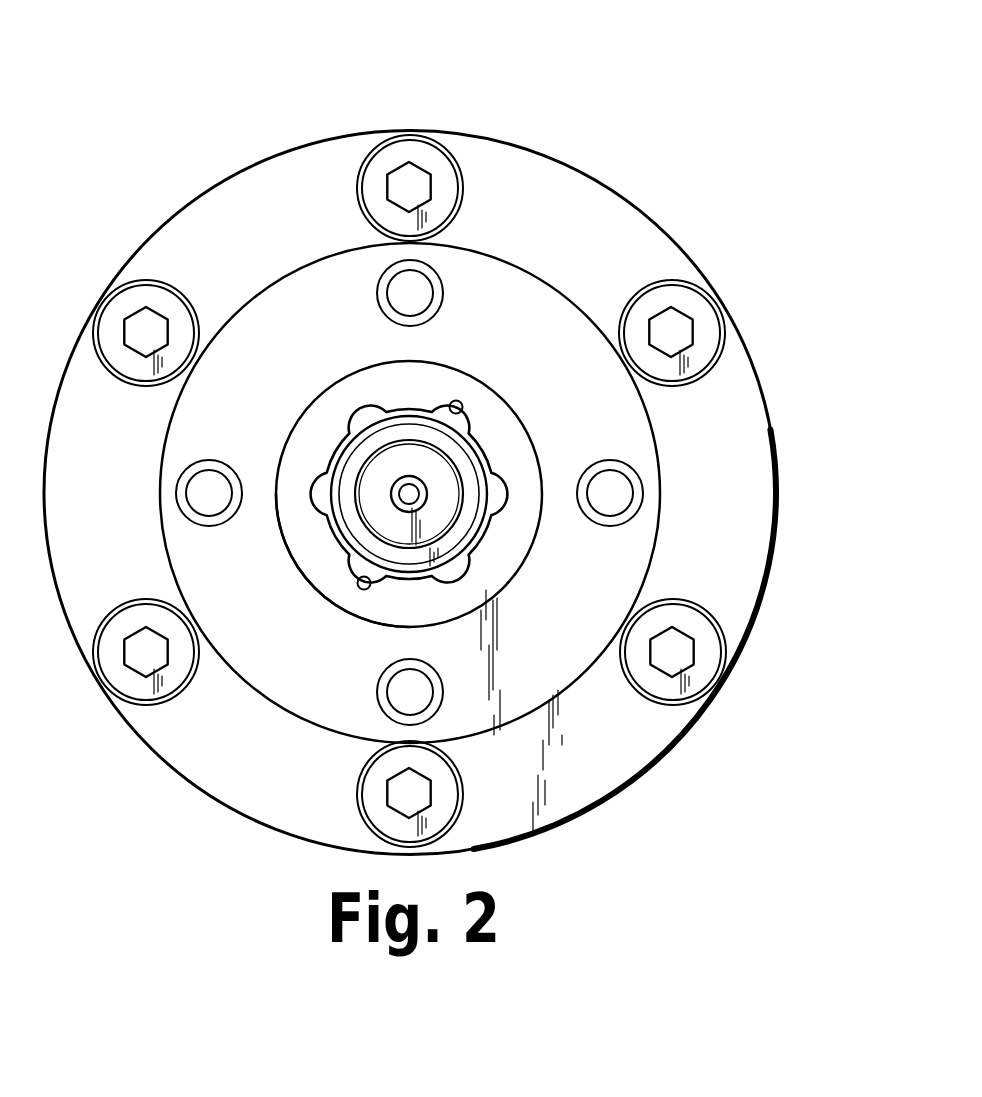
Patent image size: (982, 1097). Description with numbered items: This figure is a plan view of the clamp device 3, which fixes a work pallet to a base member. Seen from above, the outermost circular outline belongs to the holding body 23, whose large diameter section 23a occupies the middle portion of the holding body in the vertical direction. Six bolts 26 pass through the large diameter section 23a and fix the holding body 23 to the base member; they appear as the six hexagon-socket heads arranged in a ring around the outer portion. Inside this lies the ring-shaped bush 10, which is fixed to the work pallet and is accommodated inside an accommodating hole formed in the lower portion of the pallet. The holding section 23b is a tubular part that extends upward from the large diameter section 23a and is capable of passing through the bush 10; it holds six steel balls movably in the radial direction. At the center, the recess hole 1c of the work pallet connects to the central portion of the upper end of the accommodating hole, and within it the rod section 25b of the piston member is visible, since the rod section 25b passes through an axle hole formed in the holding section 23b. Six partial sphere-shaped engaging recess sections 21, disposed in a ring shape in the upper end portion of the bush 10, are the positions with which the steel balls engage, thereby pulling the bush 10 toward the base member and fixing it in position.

The clamp device 3 is at (463, 433).
The holding body 23 is at (463, 493).
The large diameter section 23a is at (688, 251).
The holding section 23b is at (538, 433).
The bush 10 is at (661, 530).
The recess hole 1c is at (290, 543).
The rod section 25b is at (493, 546).
The engaging recess section 21 is at (459, 404).
The bolt 26 is at (647, 692).